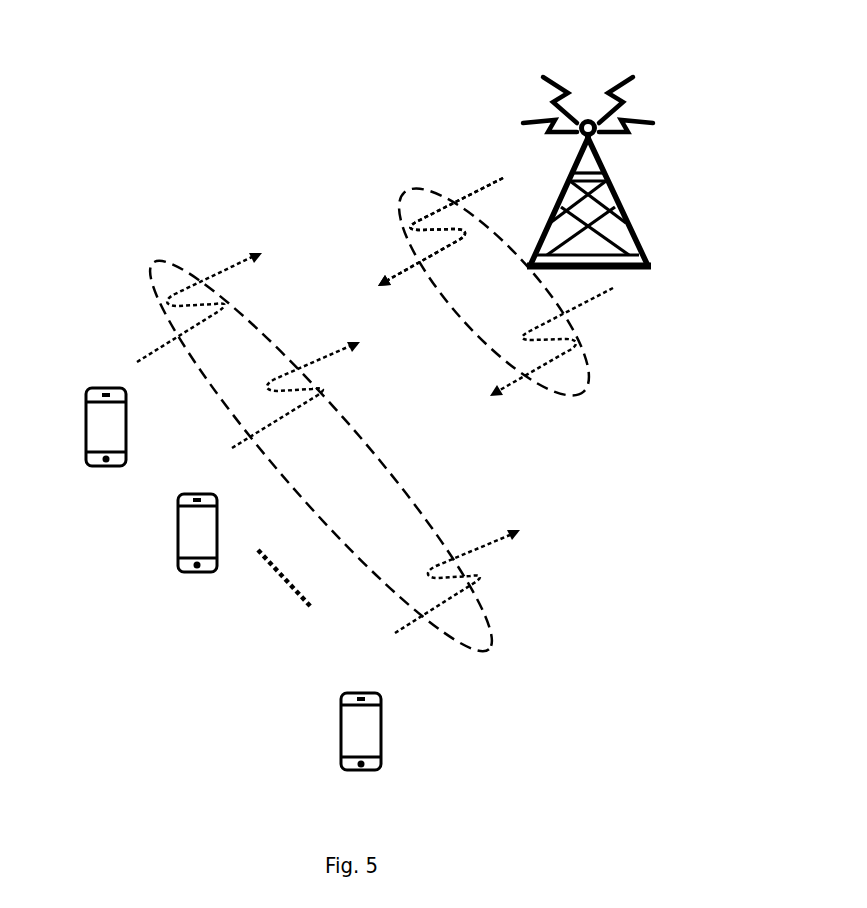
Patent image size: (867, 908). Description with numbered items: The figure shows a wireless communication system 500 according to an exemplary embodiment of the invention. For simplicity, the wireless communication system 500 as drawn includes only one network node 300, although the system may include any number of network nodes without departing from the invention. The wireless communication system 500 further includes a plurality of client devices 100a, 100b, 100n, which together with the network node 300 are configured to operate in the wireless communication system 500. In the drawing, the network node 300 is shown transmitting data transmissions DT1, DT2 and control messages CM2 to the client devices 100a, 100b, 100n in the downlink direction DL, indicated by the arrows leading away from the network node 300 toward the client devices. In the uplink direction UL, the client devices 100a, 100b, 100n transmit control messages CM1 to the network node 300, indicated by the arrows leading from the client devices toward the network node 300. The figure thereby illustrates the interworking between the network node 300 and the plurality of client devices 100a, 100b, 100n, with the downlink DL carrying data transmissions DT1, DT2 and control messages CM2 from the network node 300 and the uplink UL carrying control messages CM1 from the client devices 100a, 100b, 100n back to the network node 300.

The wireless communication system 500 is at (121, 79).
The network node 300 is at (630, 210).
The client device 100a is at (85, 407).
The client device 100b is at (177, 562).
The client device 100n is at (340, 758).
The control message CM1 is at (328, 435).
The control message CM2 is at (574, 342).
The data transmission DT1 is at (437, 222).
The data transmission DT2 is at (440, 232).
The downlink DL is at (575, 372).
The uplink UL is at (483, 617).